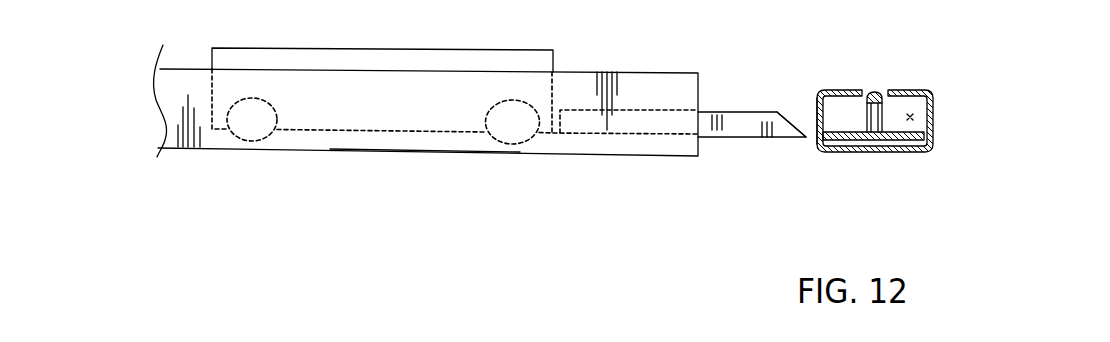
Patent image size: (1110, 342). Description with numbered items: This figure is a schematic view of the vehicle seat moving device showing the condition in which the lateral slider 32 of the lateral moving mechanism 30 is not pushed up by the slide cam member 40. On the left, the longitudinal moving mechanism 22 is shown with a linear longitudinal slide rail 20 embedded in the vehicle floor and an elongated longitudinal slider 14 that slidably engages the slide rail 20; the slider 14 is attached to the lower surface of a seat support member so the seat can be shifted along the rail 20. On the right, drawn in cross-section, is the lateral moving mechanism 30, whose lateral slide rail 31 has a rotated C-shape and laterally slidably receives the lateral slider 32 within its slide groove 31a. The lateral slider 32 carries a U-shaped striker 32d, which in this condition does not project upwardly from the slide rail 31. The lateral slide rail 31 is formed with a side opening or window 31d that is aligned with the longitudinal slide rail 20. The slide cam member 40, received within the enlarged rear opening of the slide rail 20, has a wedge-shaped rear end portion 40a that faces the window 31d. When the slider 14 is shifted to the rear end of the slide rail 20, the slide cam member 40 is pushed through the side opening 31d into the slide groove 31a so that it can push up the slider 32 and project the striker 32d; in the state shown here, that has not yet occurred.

The longitudinal slider 14 is at (449, 57).
The longitudinal slide rail 20 is at (322, 110).
The longitudinal moving mechanism 22 is at (379, 152).
The lateral moving mechanism 30 is at (874, 129).
The lateral slide rail 31 is at (820, 150).
The slide groove 31a is at (912, 117).
The side opening 31d is at (818, 120).
The lateral slider 32 is at (870, 150).
The striker 32d is at (882, 118).
The slide cam member 40 is at (748, 112).
The wedge-shaped rear end portion 40a is at (786, 140).